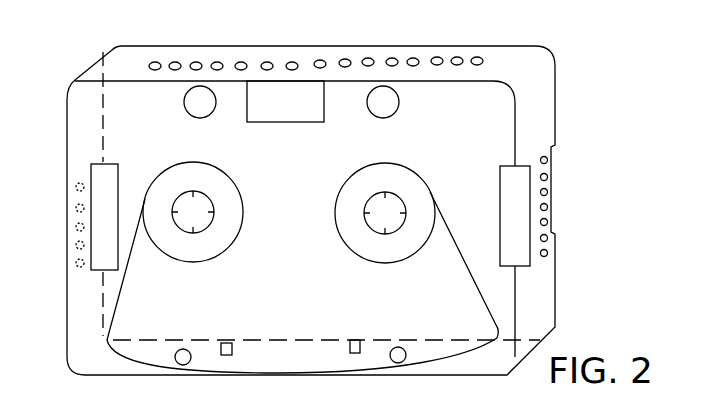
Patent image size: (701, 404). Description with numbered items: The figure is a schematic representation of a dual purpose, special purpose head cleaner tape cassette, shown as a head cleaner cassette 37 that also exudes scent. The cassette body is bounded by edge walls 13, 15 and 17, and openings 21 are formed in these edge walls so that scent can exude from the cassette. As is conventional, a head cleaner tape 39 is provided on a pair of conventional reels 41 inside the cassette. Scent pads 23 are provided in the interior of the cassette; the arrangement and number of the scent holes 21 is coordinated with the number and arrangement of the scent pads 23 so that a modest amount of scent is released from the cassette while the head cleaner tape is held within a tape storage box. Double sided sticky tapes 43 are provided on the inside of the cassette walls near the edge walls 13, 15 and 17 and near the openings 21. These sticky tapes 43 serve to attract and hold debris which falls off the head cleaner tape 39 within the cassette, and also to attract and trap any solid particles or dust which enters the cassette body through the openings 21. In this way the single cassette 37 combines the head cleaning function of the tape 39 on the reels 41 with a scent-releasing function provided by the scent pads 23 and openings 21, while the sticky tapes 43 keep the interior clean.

The edge wall 13 is at (527, 58).
The edge wall 15 is at (540, 303).
The edge wall 17 is at (80, 285).
The openings 21 is at (548, 207).
The scent pads 23 is at (397, 110).
The head cleaner cassette 37 is at (57, 322).
The head cleaner tape 39 is at (473, 283).
The reels 41 is at (395, 163).
The double sided sticky tapes 43 is at (110, 190).